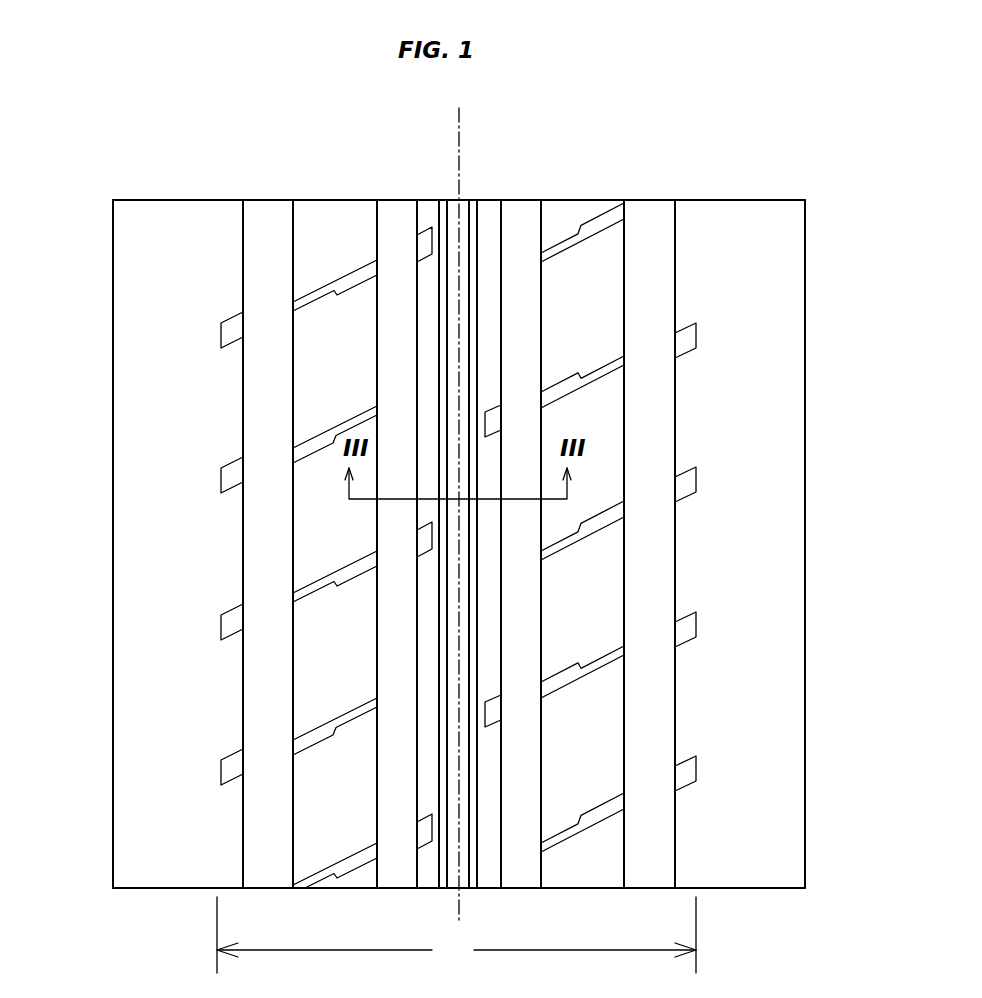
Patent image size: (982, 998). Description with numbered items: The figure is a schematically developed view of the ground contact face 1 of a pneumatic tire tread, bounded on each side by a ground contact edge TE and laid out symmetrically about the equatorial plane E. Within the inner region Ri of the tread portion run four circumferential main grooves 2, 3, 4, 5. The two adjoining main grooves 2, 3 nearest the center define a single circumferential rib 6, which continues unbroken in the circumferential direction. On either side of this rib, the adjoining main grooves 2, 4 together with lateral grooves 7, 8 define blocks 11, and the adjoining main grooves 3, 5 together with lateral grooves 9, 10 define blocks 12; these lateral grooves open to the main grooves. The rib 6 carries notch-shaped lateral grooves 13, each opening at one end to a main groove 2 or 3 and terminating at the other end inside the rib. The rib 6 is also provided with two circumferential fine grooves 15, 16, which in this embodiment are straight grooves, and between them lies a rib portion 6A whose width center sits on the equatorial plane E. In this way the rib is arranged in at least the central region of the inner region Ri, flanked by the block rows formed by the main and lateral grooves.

The ground contact face 1 is at (553, 218).
The circumferential main groove 2 is at (395, 218).
The circumferential main groove 3 is at (526, 218).
The circumferential main groove 4 is at (267, 228).
The circumferential main groove 5 is at (650, 225).
The circumferential rib 6 is at (489, 222).
The rib portion 6A is at (460, 200).
The lateral groove 7 is at (318, 440).
The lateral groove 8 is at (355, 570).
The lateral groove 9 is at (560, 390).
The lateral groove 10 is at (605, 522).
The block 11 is at (315, 528).
The block 12 is at (600, 440).
The notch-shaped lateral groove 13 is at (423, 540).
The circumferential fine groove 15 is at (445, 890).
The circumferential fine groove 16 is at (473, 892).
The equatorial plane E is at (463, 125).
The ground contact edge TE is at (113, 687).
The inner region Ri is at (456, 935).